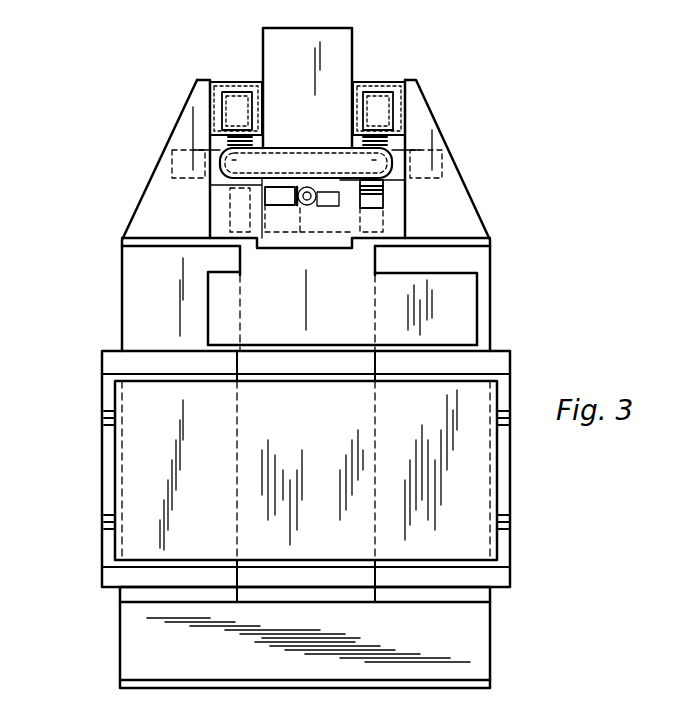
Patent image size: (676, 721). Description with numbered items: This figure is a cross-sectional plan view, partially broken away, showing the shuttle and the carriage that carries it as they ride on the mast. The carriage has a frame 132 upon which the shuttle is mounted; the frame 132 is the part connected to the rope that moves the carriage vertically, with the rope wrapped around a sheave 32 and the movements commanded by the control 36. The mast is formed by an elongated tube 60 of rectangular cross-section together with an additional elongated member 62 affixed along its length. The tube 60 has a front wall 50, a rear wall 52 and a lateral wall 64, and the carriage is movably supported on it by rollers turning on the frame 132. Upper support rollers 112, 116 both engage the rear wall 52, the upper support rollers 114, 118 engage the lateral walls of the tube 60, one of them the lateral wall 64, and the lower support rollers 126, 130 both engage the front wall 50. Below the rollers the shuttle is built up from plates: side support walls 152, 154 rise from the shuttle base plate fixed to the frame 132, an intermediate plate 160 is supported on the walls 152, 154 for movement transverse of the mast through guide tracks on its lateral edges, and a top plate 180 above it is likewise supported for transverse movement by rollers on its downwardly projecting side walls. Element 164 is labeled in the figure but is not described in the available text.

The frame 132 is at (497, 271).
The elongated member 62 is at (352, 52).
The upper support roller 112 is at (237, 96).
The upper support roller 116 is at (375, 83).
The elongated tube 60 is at (290, 150).
The rear wall 52 is at (327, 148).
The lateral wall 64 is at (247, 164).
The control 36 is at (359, 164).
The upper support roller 114 is at (172, 163).
The upper support roller 118 is at (443, 158).
The lower support roller 126 is at (210, 223).
The front wall 50 is at (400, 190).
The sheave 32 is at (358, 220).
The lower support roller 130 is at (385, 222).
The side support wall 152 is at (108, 384).
The top plate 180 is at (150, 467).
The right panel edge 164 is at (498, 488).
The intermediate plate 160 is at (107, 546).
The side support wall 154 is at (500, 562).